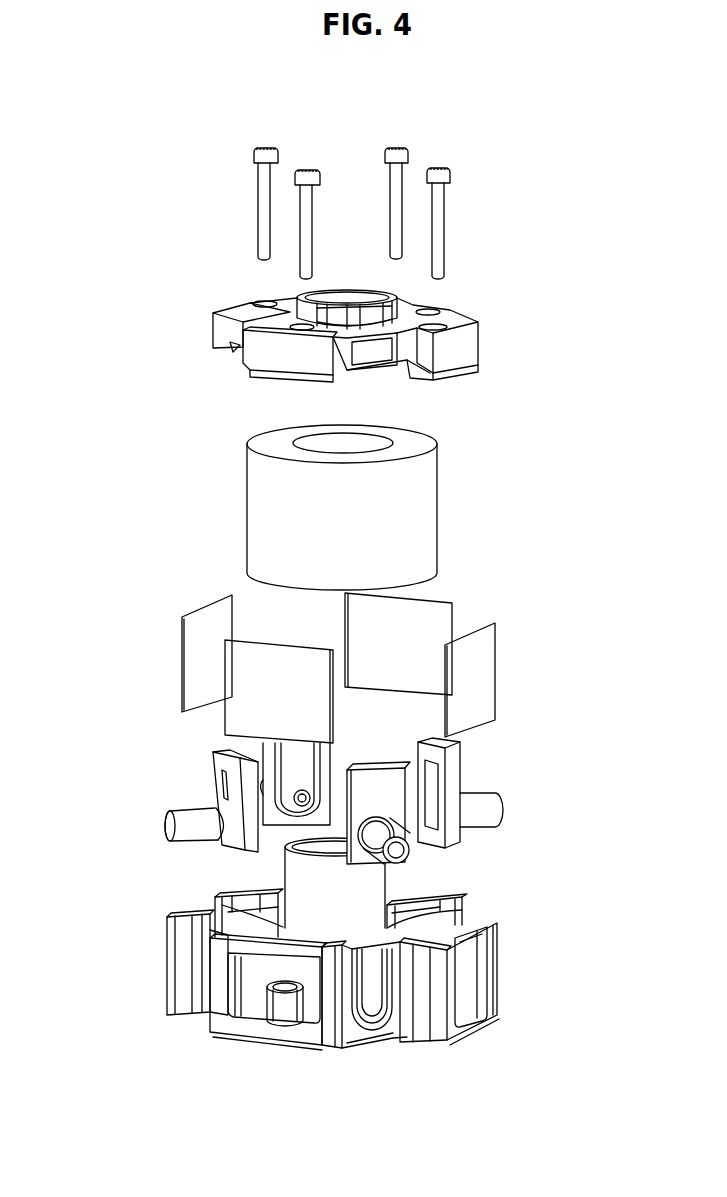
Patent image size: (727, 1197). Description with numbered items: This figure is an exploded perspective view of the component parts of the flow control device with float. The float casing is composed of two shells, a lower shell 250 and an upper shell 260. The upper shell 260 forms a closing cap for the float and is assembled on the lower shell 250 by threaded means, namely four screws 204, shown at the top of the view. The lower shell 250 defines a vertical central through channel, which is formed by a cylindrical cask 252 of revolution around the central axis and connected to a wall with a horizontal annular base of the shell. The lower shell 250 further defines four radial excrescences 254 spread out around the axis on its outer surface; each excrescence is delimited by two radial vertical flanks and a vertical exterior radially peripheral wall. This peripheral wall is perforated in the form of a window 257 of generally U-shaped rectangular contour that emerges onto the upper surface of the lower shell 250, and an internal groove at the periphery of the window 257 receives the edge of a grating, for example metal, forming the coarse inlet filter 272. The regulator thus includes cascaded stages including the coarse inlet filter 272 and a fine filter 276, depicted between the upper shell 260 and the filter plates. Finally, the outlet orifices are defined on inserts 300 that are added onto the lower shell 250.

The screws 204 is at (266, 195).
The upper shell 260 is at (462, 346).
The fine filter 276 is at (422, 515).
The coarse inlet filter 272 is at (218, 630).
The inserts 300 is at (345, 759).
The cylindrical cask 252 is at (302, 875).
The lower shell 250 is at (312, 1019).
The radial excrescences 254 is at (150, 997).
The window 257 is at (277, 972).